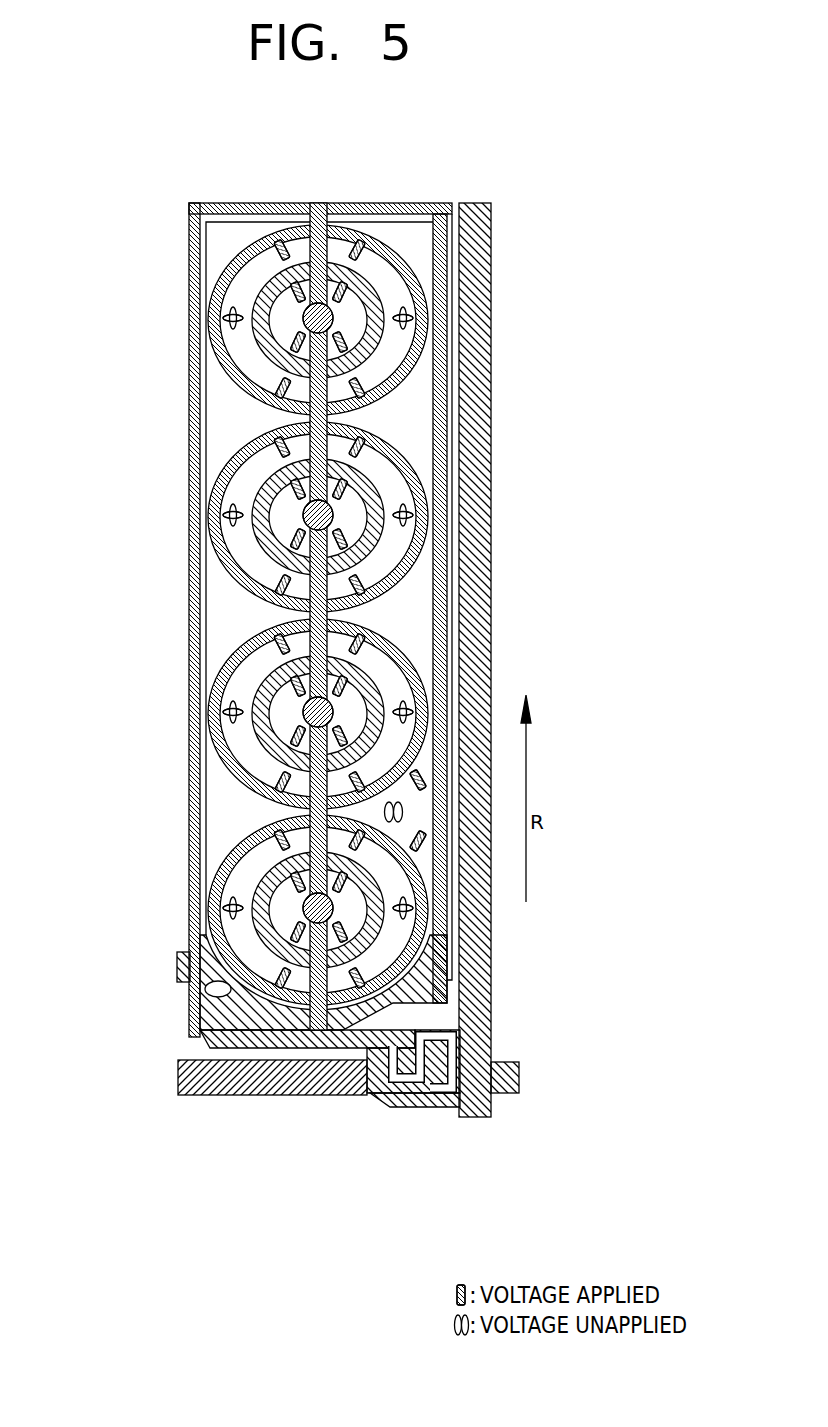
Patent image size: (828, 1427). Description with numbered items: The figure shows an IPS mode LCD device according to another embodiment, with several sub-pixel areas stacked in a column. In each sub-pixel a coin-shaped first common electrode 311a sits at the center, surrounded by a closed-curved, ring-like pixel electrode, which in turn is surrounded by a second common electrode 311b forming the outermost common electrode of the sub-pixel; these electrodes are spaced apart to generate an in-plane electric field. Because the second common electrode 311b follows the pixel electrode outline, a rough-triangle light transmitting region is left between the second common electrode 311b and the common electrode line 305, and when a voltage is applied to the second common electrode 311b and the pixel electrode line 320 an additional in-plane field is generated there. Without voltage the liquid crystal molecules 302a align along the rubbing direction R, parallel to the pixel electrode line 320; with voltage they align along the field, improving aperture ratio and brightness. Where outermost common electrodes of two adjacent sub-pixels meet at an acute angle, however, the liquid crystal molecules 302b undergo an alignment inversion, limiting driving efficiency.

The first common electrode 311a is at (312, 314).
The second common electrode 311b is at (216, 370).
The common electrode line 305 is at (447, 400).
The pixel electrode line 320 is at (445, 495).
The liquid crystal molecules 302a is at (423, 780).
The liquid crystal molecules 302b is at (402, 812).